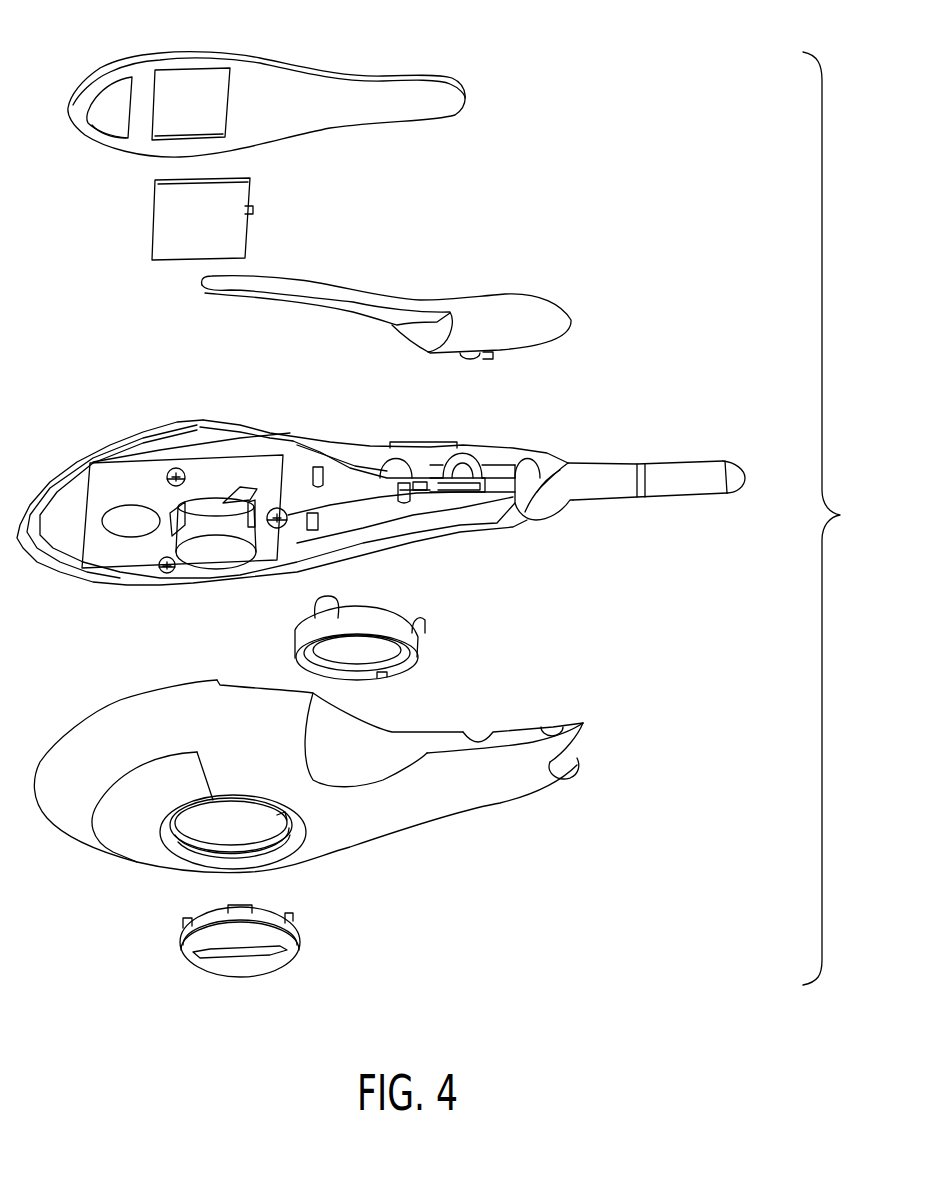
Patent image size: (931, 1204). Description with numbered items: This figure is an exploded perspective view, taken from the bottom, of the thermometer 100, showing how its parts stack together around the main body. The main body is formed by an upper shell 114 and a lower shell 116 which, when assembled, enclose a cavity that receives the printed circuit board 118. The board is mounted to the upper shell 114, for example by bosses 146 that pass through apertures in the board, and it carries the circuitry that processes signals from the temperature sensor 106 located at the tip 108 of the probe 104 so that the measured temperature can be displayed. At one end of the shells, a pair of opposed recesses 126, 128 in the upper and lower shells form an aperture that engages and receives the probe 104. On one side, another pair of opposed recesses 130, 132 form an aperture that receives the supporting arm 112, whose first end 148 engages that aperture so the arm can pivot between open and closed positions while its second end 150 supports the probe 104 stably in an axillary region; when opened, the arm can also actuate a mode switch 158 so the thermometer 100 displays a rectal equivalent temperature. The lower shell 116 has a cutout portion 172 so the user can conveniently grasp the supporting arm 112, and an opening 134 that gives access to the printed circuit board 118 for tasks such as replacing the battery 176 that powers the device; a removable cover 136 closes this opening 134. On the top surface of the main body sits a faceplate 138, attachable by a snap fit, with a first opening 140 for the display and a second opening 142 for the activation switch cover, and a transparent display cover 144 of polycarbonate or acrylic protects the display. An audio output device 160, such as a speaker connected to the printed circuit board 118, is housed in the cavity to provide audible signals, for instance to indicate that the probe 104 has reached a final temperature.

The thermometer 100 is at (839, 518).
The probe 104 is at (674, 462).
The temperature sensor 106 is at (740, 470).
The tip 108 is at (745, 490).
The supporting arm 112 is at (543, 302).
The upper shell 114 is at (119, 430).
The lower shell 116 is at (490, 808).
The printed circuit board 118 is at (88, 572).
The recess 126 is at (569, 462).
The recess 128 is at (580, 766).
The recess 130 is at (471, 458).
The recess 132 is at (478, 738).
The opening 134 is at (178, 845).
The removable cover 136 is at (300, 950).
The faceplate 138 is at (412, 72).
The first opening 140 is at (190, 75).
The second opening 142 is at (110, 72).
The display cover 144 is at (253, 195).
The bosses 146 is at (167, 575).
The first end 148 is at (478, 296).
The second end 150 is at (200, 286).
The mode switch 158 is at (419, 480).
The audio output device 160 is at (392, 612).
The cutout portion 172 is at (338, 770).
The battery 176 is at (217, 553).